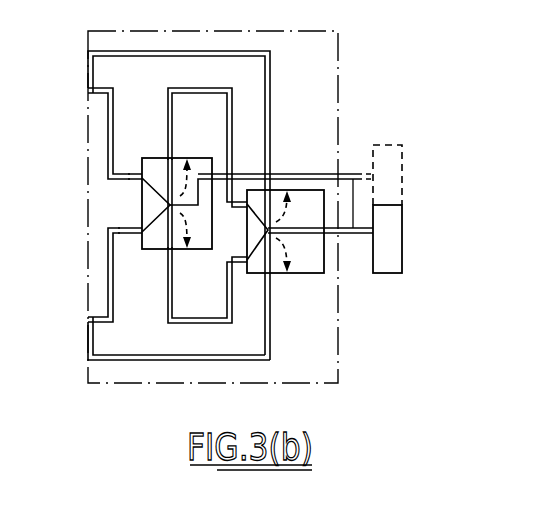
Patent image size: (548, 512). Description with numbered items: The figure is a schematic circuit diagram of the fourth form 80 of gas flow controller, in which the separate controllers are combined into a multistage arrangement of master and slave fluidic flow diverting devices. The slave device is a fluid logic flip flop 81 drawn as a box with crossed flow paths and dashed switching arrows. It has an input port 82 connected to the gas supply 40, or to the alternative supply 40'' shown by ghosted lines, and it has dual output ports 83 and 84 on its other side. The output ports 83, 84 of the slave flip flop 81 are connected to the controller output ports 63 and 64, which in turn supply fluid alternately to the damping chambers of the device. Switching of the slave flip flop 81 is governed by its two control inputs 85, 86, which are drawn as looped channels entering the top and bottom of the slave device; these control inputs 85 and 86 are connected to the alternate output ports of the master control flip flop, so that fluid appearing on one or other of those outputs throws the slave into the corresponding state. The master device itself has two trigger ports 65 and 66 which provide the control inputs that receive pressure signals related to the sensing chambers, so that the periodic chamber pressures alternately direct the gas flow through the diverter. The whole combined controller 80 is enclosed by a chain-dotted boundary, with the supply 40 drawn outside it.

The fourth form 80 is at (130, 393).
The trigger port 65 is at (88, 51).
The output port 63 is at (88, 88).
The output port 64 is at (85, 318).
The trigger port 66 is at (88, 358).
The output port 83 is at (142, 180).
The output port 84 is at (142, 229).
The control input 85 is at (167, 155).
The control input 86 is at (165, 250).
The slave flip flop 81 is at (186, 250).
The input port 82 is at (280, 173).
The gas source 40 is at (307, 250).
The alternative supply 40'' is at (375, 159).